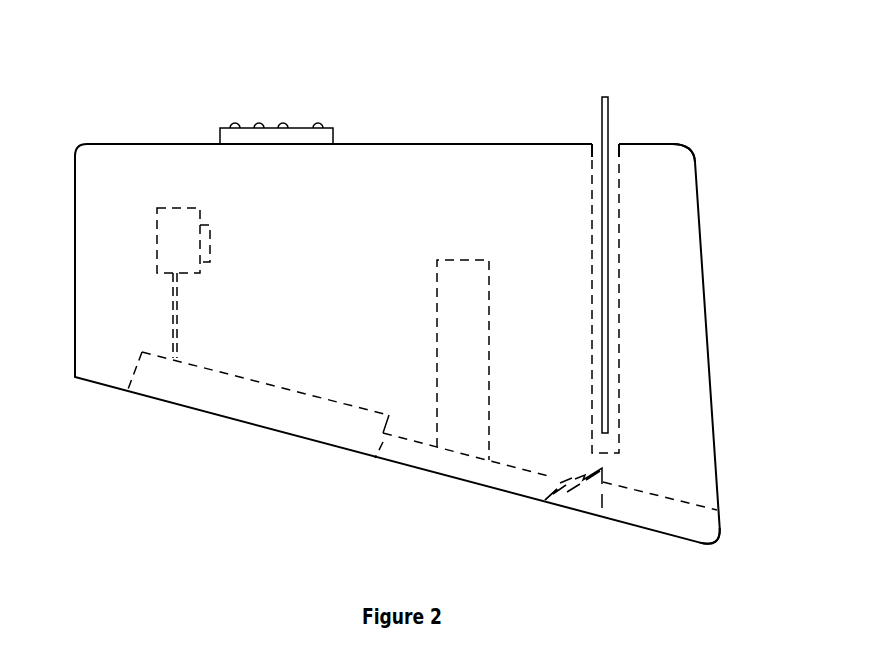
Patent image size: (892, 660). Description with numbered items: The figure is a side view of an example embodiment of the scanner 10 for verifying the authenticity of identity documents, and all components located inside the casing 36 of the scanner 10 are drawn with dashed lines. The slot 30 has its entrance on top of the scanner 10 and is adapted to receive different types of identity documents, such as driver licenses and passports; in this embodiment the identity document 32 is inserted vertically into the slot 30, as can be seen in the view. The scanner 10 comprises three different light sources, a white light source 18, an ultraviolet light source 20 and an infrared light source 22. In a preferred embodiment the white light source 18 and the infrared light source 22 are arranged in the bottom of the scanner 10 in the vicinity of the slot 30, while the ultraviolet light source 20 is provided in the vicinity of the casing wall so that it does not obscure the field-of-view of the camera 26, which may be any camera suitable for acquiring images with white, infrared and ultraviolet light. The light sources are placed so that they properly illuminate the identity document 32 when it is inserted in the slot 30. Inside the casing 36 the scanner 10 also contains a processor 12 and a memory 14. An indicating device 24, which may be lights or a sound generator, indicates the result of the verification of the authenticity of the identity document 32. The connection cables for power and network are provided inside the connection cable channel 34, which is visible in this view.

The scanner 10 is at (348, 187).
The processor 12 is at (257, 383).
The memory 14 is at (507, 459).
The white light source 18 is at (580, 500).
The ultraviolet (UV) light source 20 is at (463, 360).
The infrared (IR) light source 22 is at (555, 492).
The indicating device 24 is at (308, 137).
The camera 26 is at (183, 283).
The slot 30 is at (597, 157).
The identity document 32 is at (610, 117).
The connection cable channel 34 is at (670, 520).
The casing 36 is at (684, 168).